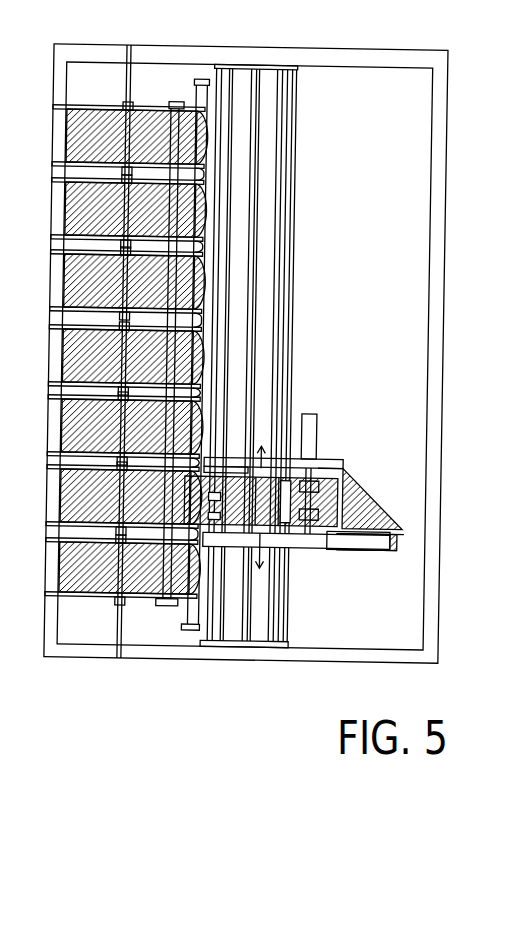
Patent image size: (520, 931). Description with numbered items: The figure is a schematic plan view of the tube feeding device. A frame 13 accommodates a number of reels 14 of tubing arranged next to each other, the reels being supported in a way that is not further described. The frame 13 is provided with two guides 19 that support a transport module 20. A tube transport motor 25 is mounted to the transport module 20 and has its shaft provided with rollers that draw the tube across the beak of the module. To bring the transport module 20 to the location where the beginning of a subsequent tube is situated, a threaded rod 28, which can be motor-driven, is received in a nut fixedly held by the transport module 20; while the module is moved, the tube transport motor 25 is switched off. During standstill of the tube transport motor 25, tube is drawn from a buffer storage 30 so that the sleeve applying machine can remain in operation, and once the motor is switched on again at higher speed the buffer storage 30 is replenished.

The frame 13 is at (173, 653).
The reels 14 is at (87, 585).
The guide rails 19 is at (272, 607).
The transport module 20 is at (298, 548).
The tube transport motor 25 is at (318, 435).
The threaded rod 28 is at (258, 287).
The buffer storage 30 is at (358, 210).